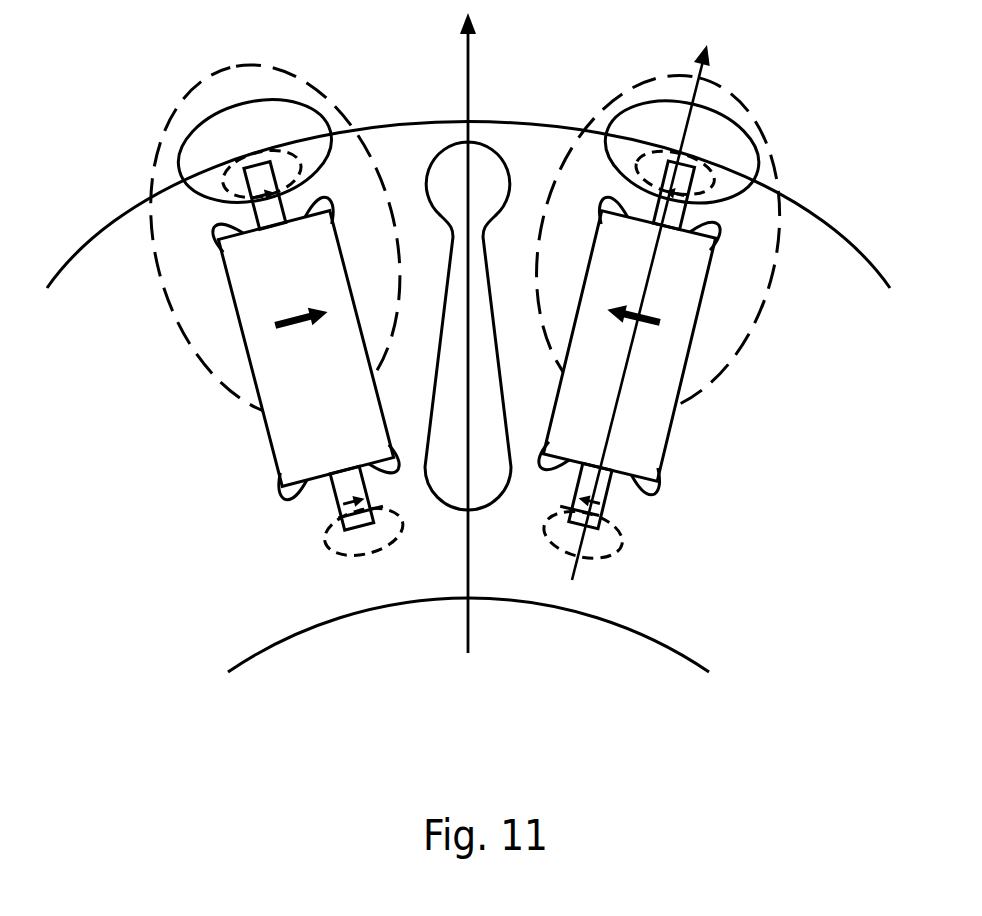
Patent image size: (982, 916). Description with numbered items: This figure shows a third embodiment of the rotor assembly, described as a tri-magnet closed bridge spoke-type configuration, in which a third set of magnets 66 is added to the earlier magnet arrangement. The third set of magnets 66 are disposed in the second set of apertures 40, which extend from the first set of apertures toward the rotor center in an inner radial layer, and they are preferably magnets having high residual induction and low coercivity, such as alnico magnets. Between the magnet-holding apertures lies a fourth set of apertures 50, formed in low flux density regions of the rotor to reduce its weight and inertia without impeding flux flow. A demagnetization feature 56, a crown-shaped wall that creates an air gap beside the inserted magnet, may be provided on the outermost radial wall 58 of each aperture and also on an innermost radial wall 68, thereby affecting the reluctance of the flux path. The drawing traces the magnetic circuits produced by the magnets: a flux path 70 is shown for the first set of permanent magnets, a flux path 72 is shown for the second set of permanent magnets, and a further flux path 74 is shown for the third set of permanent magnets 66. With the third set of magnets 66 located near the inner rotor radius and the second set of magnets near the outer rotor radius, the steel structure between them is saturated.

The second set of apertures 40 is at (373, 525).
The fourth set of apertures 50 is at (487, 142).
The demagnetization feature 56 is at (217, 243).
The outermost radial wall 58 is at (333, 216).
The third set of magnets 66 is at (336, 492).
The innermost radial wall 68 is at (378, 457).
The flux path 70 is at (157, 162).
The flux path 72 is at (265, 154).
The flux region 74 is at (330, 525).